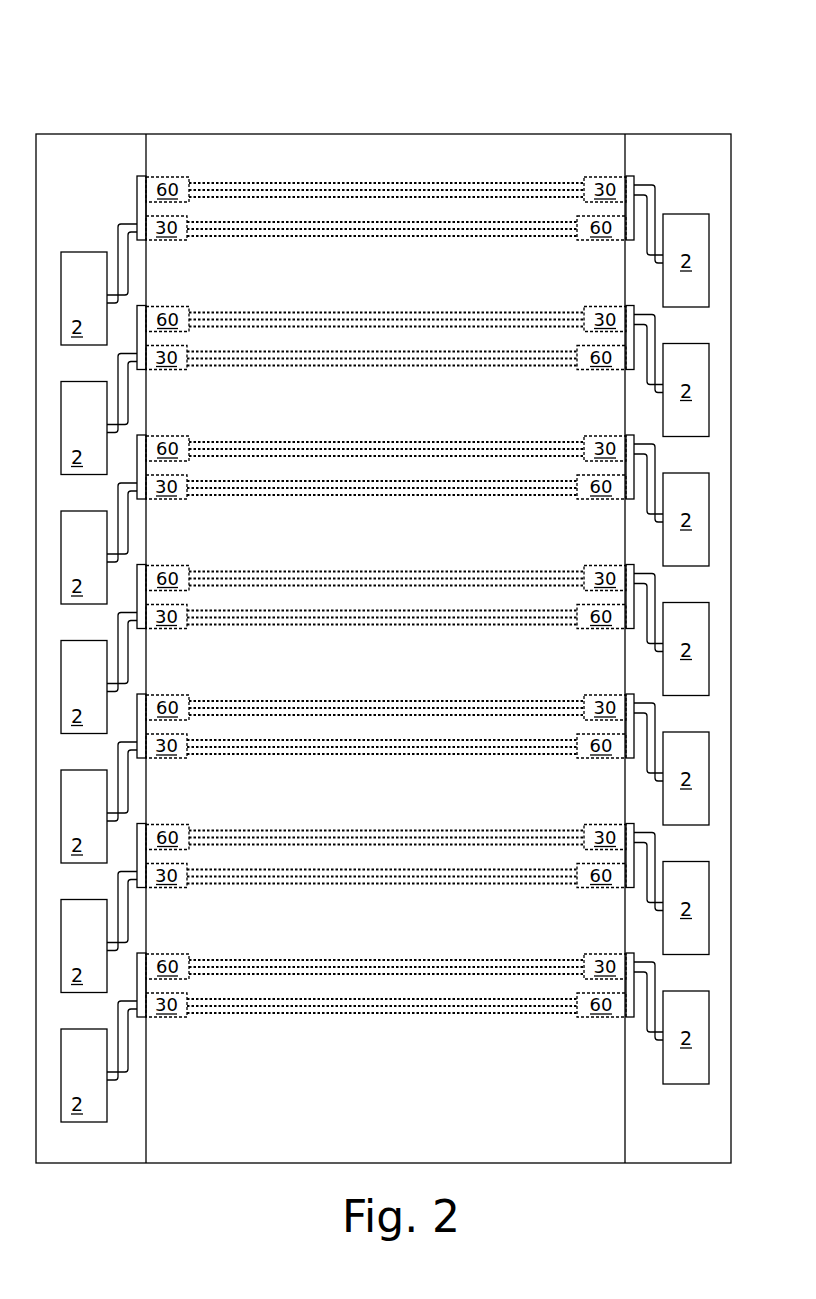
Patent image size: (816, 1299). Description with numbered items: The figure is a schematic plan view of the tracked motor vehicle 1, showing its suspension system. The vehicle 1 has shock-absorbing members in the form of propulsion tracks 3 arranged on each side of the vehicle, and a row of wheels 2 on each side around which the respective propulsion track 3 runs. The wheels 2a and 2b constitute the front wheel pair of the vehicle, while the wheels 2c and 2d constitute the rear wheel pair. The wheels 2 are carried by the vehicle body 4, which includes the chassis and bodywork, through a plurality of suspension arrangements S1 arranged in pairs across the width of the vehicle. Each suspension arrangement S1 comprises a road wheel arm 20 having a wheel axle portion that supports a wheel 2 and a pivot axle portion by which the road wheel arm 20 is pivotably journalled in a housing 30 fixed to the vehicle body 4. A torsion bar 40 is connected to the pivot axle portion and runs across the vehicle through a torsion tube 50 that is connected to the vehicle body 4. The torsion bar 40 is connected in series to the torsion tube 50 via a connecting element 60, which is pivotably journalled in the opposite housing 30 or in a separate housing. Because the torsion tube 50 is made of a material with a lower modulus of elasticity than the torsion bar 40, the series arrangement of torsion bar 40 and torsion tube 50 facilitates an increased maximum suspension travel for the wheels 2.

The motor vehicle 1 is at (597, 75).
The wheel 2 is at (385, 668).
The front wheel 2a is at (70, 345).
The front wheel 2b is at (700, 307).
The rear wheel 2c is at (72, 1123).
The rear wheel 2d is at (688, 1083).
The propulsion track 3 is at (85, 188).
The vehicle body 4 is at (626, 156).
The road wheel arm 20 is at (383, 628).
The housing 30 is at (386, 597).
The torsion bar 40 is at (385, 601).
The torsion tube 50 is at (385, 601).
The connecting element 60 is at (386, 597).
The suspension arrangement S1 is at (233, 220).